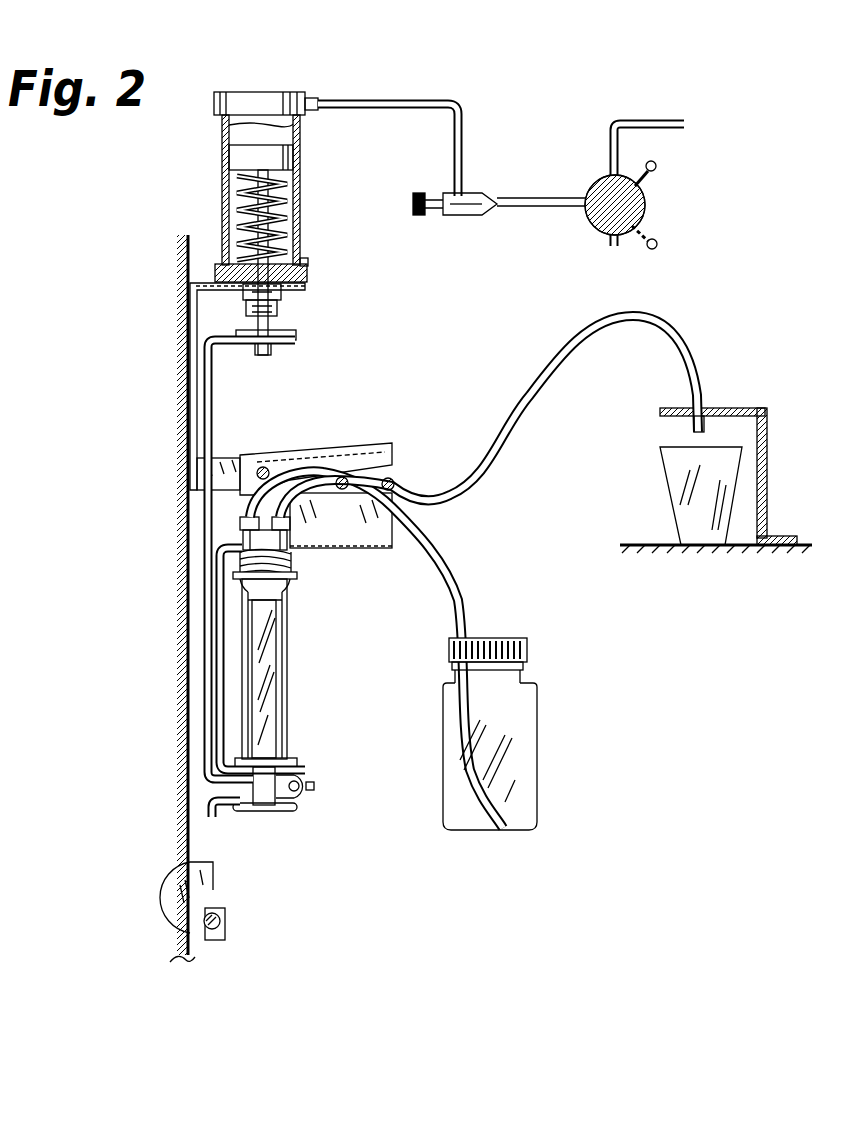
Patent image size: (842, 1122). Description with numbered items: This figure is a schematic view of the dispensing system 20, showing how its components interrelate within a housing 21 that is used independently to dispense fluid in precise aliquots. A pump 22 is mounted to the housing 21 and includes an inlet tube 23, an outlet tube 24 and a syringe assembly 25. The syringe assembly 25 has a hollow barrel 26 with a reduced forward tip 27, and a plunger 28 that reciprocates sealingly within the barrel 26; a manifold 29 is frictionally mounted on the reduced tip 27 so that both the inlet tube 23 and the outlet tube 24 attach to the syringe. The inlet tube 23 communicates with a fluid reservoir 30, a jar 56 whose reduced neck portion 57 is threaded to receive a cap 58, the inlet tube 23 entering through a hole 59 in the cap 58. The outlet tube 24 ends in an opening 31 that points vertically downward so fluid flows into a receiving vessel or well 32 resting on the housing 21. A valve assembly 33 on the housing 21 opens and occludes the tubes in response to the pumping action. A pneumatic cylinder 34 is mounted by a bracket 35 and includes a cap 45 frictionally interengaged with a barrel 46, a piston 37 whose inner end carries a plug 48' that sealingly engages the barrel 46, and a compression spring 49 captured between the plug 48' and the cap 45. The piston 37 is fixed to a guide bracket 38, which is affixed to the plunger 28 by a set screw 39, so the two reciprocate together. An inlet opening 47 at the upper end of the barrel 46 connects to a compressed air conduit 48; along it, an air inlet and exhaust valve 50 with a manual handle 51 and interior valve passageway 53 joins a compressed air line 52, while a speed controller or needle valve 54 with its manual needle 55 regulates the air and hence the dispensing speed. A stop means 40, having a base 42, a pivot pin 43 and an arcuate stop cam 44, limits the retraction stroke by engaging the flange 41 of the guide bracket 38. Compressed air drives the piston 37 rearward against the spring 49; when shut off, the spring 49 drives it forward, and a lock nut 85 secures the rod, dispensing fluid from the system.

The dispensing system 20 is at (156, 279).
The housing 21 is at (185, 527).
The pump 22 is at (169, 621).
The inlet tube 23 is at (455, 578).
The outlet tube 24 is at (535, 410).
The syringe assembly 25 is at (306, 686).
The hollow barrel 26 is at (284, 724).
The reduced forward tip 27 is at (290, 582).
The plunger 28 is at (265, 648).
The manifold 29 is at (292, 566).
The fluid reservoir 30 is at (563, 742).
The opening 31 is at (703, 434).
The receiving vessel or well 32 is at (688, 505).
The valve assembly 33 is at (341, 430).
The pneumatic cylinder 34 is at (311, 197).
The bracket 35 is at (192, 350).
The piston 37 is at (270, 336).
The guide bracket 38 is at (212, 407).
The set screw 39 is at (314, 787).
The stop means 40 is at (150, 887).
The flange 41 is at (206, 814).
The base 42 is at (205, 940).
The pivot pin 43 is at (225, 920).
The stop cam 44 is at (215, 881).
The cap 45 is at (300, 279).
The barrel 46 is at (300, 240).
The inlet opening 47 is at (315, 100).
The compressed air conduit 48 is at (408, 127).
The plug 48' is at (303, 152).
The compression spring 49 is at (280, 218).
The air inlet and exhaust valve 50 is at (686, 211).
The manual handle 51 is at (657, 171).
The compressed air line 52 is at (650, 121).
The interior valve passageway 53 is at (648, 224).
The speed controller or needle valve 54 is at (486, 232).
The manual needle 55 is at (432, 217).
The jar 56 is at (520, 797).
The reduced neck portion 57 is at (508, 683).
The cap 58 is at (527, 650).
The hole 59 is at (486, 638).
The lock nut 85 is at (280, 308).